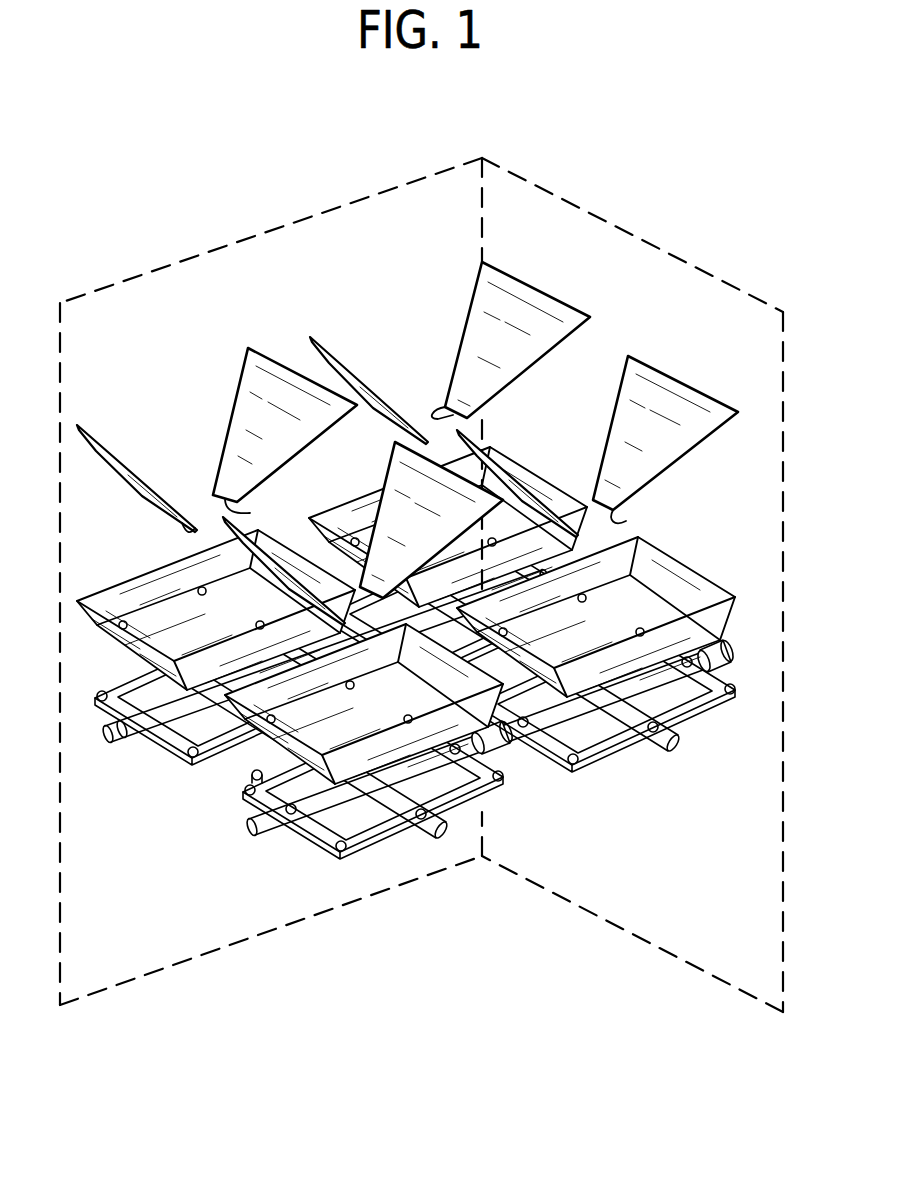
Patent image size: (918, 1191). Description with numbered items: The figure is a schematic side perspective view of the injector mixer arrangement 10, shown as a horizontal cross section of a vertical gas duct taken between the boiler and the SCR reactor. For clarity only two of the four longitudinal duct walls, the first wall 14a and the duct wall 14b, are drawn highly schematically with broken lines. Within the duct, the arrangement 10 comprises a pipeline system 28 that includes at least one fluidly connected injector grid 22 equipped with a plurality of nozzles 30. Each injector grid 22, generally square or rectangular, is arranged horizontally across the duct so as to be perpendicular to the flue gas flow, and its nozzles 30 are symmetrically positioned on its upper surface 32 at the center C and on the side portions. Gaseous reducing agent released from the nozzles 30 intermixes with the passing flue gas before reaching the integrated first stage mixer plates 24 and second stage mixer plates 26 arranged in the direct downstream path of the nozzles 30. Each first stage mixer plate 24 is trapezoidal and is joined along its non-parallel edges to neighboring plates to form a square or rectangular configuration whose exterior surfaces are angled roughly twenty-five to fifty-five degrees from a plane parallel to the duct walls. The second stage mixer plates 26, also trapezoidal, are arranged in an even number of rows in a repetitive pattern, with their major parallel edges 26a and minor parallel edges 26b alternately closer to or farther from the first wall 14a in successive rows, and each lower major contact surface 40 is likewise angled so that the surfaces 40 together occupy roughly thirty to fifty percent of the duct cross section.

The injector mixer arrangement 10 is at (453, 575).
The first wall 14a is at (615, 249).
The duct wall 14b is at (372, 216).
The injector grid 22 is at (247, 803).
The first stage mixer plate 24 is at (705, 576).
The second stage mixer plate 26 is at (680, 381).
The major parallel edge 26a is at (533, 283).
The minor parallel edge 26b is at (430, 410).
The pipeline system 28 is at (730, 655).
The nozzle 30 is at (507, 793).
The upper surface 32 is at (249, 772).
The lower major contact surface 40 is at (150, 482).
The center C is at (604, 702).